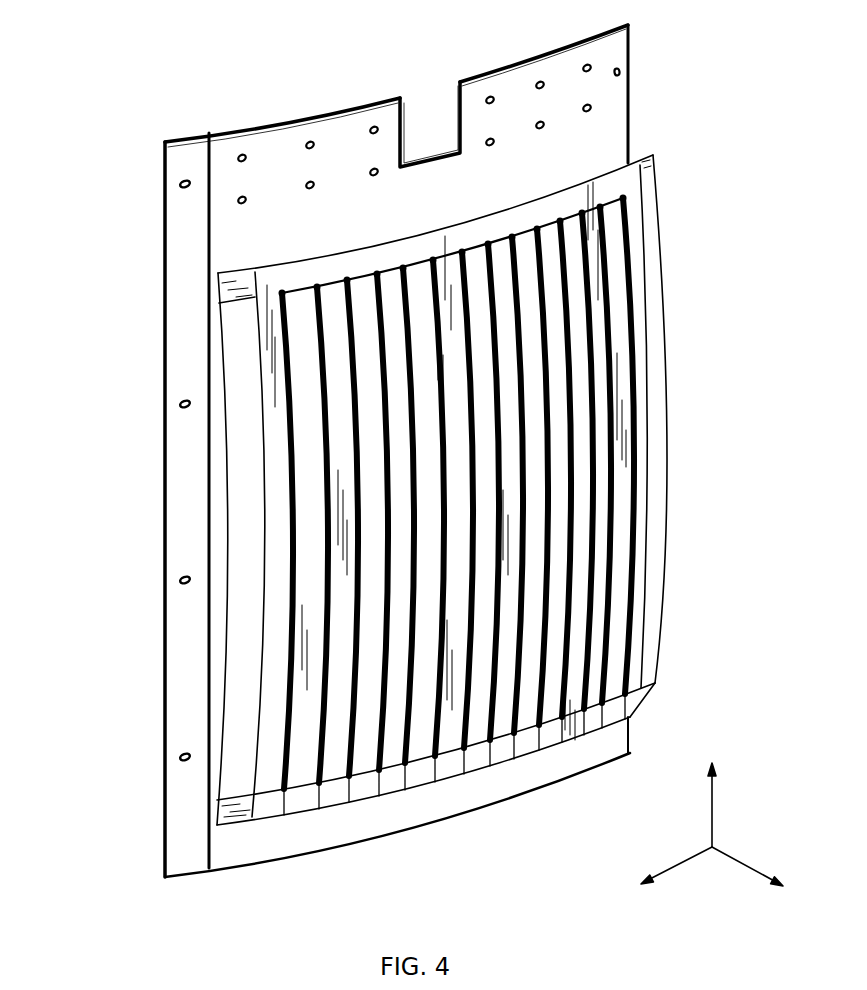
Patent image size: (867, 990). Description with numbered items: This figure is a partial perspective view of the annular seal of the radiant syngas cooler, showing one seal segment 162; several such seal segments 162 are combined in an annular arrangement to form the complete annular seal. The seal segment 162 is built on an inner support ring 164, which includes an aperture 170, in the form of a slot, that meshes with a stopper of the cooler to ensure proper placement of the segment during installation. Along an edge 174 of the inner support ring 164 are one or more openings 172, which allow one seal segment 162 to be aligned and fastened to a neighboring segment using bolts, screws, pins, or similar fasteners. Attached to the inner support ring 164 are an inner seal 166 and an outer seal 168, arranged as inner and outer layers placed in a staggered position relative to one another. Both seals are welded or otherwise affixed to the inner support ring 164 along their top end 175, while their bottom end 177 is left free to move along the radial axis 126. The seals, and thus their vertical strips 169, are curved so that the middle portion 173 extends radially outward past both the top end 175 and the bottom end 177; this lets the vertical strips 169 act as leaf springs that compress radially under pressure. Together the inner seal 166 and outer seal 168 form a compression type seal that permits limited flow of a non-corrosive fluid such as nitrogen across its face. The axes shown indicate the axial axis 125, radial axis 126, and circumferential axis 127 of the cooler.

The seal segment 162 is at (686, 35).
The inner support ring 164 is at (290, 123).
The aperture 170 is at (428, 104).
The edge 174 is at (163, 150).
The openings 172 is at (183, 182).
The top end 175 is at (653, 172).
The middle portion 173 is at (658, 363).
The inner seal 166 is at (247, 467).
The outer seal 168 is at (277, 517).
The vertical strips 169 is at (578, 540).
The bottom end 177 is at (655, 693).
The axial axis 125 is at (712, 810).
The radial axis 126 is at (742, 860).
The circumferential axis 127 is at (680, 862).